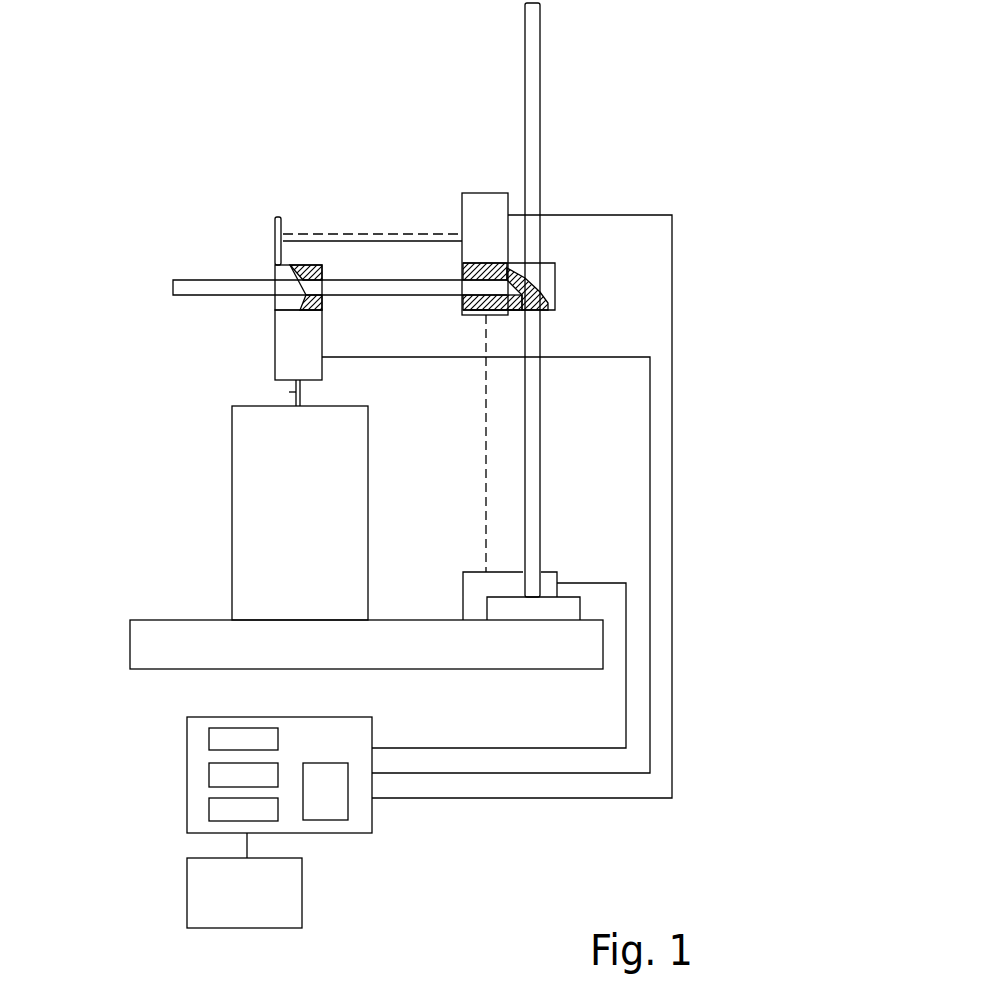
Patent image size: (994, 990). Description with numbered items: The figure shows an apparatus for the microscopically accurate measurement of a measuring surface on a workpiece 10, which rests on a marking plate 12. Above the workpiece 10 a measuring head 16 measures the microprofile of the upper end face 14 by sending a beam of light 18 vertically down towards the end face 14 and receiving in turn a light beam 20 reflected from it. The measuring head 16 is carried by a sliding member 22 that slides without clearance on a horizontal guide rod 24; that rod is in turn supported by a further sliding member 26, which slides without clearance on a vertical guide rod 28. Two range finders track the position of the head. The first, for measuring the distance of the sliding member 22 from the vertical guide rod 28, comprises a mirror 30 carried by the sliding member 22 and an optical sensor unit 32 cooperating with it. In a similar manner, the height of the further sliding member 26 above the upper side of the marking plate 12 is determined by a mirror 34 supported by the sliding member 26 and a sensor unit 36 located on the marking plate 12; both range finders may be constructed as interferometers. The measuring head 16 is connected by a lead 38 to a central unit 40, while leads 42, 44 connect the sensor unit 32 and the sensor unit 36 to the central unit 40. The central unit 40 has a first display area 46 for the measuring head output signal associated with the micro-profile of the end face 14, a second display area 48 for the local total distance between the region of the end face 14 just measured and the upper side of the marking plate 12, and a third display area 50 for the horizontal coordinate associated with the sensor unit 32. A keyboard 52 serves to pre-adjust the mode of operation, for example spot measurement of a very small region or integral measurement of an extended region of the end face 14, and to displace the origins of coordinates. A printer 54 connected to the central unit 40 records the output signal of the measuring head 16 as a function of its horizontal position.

The workpiece 10 is at (270, 492).
The marking plate 12 is at (145, 645).
The upper end face 14 is at (242, 400).
The measuring head 16 is at (297, 352).
The beam of light 18 is at (293, 391).
The reflected light beam 20 is at (300, 401).
The sliding member 22 is at (275, 302).
The horizontal guide rod 24 is at (190, 285).
The further sliding member 26 is at (540, 277).
The vertical guide rod 28 is at (535, 445).
The mirror 30 is at (279, 215).
The optical sensor unit 32 is at (483, 207).
The mirror 34 is at (497, 312).
The sensor unit 36 is at (503, 580).
The lead 38 is at (455, 360).
The central unit 40 is at (338, 740).
The lead 42 is at (590, 213).
The lead 44 is at (565, 747).
The first display area 46 is at (218, 738).
The second display area 48 is at (218, 776).
The third display area 50 is at (220, 812).
The keyboard 52 is at (335, 806).
The printer 54 is at (212, 881).